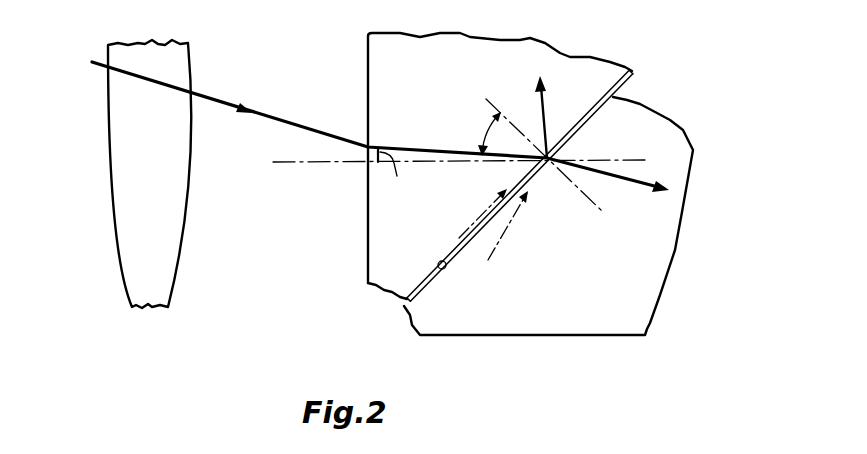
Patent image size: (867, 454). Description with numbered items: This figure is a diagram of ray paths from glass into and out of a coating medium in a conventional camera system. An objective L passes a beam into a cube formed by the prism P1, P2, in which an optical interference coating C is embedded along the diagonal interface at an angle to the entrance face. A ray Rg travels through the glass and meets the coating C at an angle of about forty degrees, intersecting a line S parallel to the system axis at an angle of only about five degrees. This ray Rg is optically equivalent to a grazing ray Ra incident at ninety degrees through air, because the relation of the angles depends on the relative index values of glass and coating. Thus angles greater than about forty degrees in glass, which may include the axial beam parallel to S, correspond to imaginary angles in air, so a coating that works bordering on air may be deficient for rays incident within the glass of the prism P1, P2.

The objective L is at (128, 229).
The line parallel to the system axis S is at (293, 163).
The ray in glass Rg is at (412, 150).
The grazing ray Ra is at (475, 222).
The prism P1 is at (504, 184).
The prism P2 is at (520, 197).
The optical interference coating C is at (446, 268).